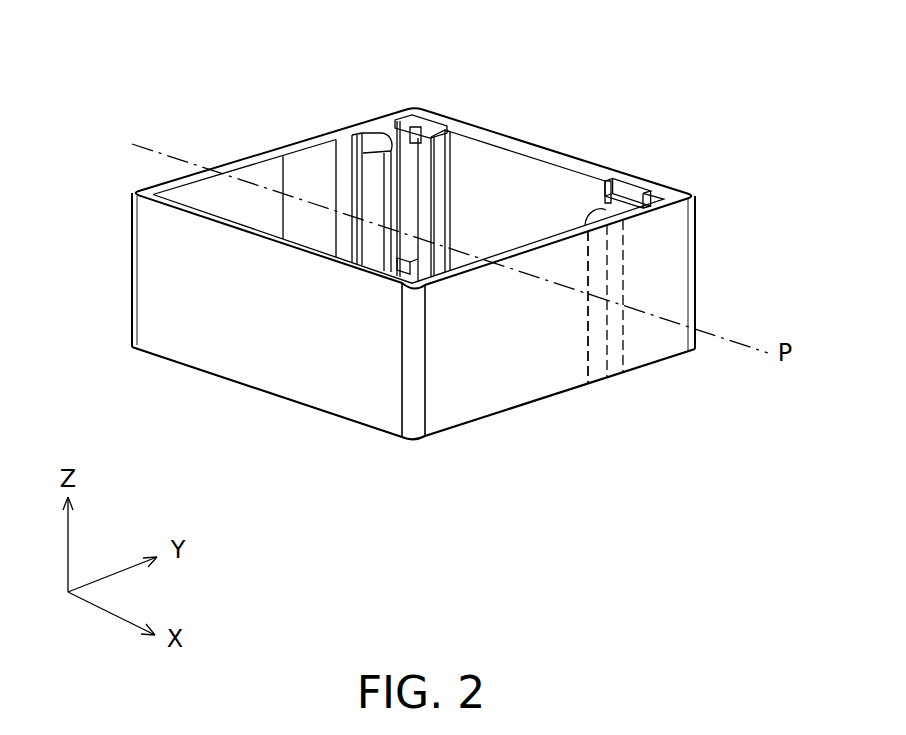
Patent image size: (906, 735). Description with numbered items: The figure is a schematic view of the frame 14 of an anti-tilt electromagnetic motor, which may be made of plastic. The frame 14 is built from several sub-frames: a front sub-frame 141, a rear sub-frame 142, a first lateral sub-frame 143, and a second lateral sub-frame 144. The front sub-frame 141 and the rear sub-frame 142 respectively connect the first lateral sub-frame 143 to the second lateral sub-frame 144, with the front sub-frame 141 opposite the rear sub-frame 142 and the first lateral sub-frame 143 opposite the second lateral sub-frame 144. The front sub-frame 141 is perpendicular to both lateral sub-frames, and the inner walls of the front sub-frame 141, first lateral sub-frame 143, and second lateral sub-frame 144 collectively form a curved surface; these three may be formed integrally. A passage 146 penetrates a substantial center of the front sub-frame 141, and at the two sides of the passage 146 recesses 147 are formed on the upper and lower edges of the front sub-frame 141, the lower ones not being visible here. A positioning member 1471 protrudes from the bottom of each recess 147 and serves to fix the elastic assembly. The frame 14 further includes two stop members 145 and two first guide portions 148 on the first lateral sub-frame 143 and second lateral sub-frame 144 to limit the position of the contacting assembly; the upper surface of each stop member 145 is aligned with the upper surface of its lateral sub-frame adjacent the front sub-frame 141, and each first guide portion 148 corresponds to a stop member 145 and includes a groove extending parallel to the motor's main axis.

The frame 14 is at (138, 68).
The front sub-frame 141 is at (553, 160).
The rear sub-frame 142 is at (267, 362).
The first lateral sub-frame 143 is at (242, 160).
The second lateral sub-frame 144 is at (590, 338).
The stop member 145 is at (375, 133).
The passage 146 is at (488, 184).
The recess 147 is at (427, 117).
The positioning member 1471 is at (420, 116).
The first guide portion 148 is at (360, 172).